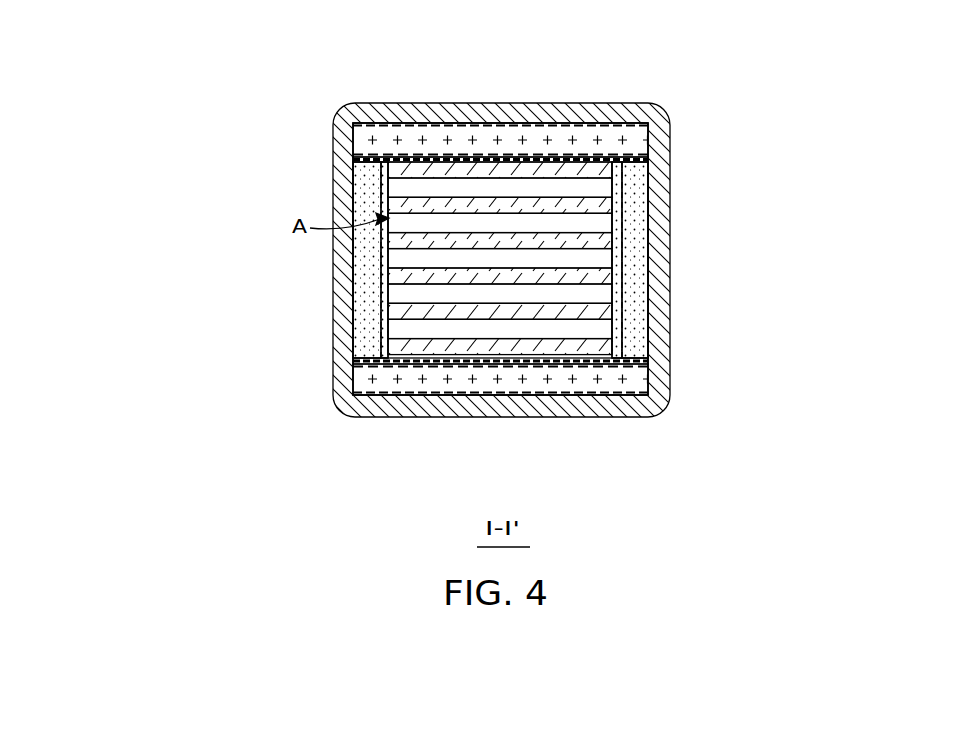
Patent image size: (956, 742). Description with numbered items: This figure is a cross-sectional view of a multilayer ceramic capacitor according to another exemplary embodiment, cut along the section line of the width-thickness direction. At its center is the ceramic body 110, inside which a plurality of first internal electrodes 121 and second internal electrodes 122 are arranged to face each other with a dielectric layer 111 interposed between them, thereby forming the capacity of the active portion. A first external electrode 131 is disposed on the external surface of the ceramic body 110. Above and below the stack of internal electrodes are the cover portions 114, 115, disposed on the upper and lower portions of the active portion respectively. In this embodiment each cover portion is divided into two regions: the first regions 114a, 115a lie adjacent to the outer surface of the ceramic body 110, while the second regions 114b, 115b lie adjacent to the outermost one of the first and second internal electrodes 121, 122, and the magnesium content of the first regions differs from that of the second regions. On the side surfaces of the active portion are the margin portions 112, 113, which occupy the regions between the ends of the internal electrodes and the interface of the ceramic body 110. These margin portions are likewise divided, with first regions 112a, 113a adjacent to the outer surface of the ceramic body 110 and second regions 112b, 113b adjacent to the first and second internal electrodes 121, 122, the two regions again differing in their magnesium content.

The ceramic body 110 is at (552, 396).
The dielectric layer 111 is at (603, 188).
The margin portion 112 is at (251, 250).
The first region 112a is at (363, 257).
The second region 112b is at (370, 307).
The margin portion 113 is at (747, 253).
The first region 113a is at (633, 255).
The second region 113b is at (618, 310).
The cover portion 114 is at (528, 57).
The first region 114a is at (436, 140).
The second region 114b is at (498, 140).
The cover portion 115 is at (528, 466).
The first region 115a is at (440, 378).
The second region 115b is at (505, 364).
The first internal electrode 121 is at (603, 171).
The second internal electrode 122 is at (603, 202).
The first external electrode 131 is at (557, 107).